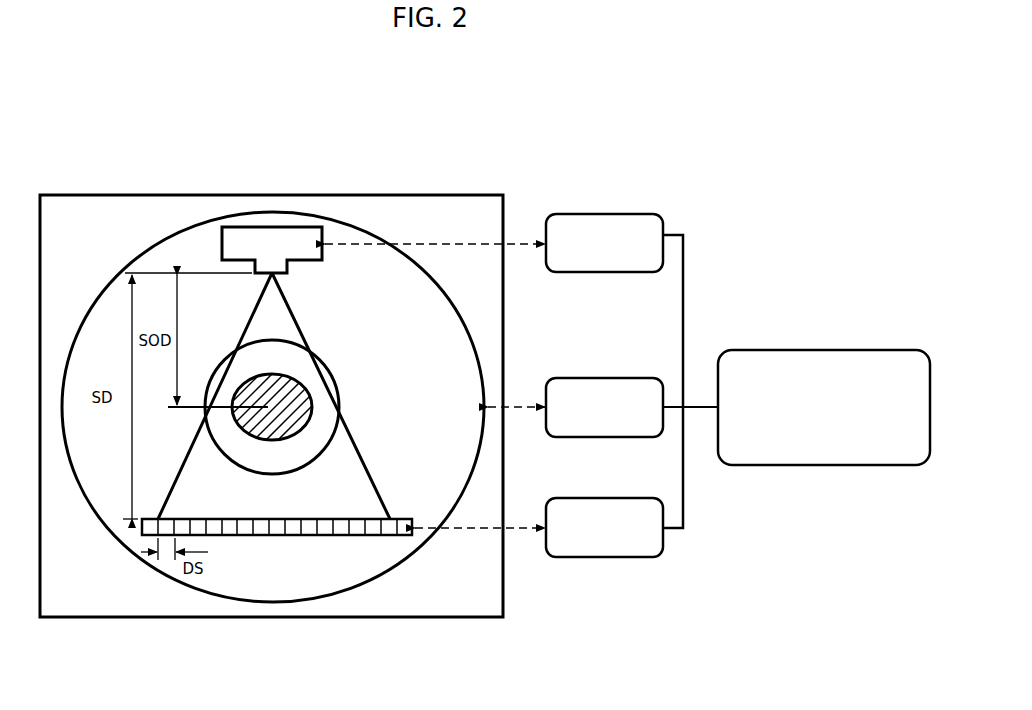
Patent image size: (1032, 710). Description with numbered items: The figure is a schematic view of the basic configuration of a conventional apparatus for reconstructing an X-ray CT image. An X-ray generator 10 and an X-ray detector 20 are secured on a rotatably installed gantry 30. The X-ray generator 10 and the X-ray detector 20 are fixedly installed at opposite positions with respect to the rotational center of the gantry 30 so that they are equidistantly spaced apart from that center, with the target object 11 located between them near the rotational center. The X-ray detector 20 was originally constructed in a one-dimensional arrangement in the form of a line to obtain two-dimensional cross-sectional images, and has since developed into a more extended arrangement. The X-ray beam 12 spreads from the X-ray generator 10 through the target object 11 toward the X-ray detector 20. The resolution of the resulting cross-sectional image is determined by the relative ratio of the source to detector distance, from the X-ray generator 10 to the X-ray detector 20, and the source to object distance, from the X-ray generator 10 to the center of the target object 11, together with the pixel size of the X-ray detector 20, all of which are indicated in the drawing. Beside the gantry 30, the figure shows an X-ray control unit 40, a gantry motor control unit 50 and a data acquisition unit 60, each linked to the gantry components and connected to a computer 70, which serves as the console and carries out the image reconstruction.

The X-ray generator 10 is at (272, 227).
The target object 11 is at (298, 392).
The X-ray beam 12 is at (183, 472).
The X-ray detector 20 is at (278, 535).
The gantry 30 is at (145, 195).
The X-ray control unit 40 is at (603, 214).
The gantry motor control unit 50 is at (603, 378).
The data acquisition unit 60 is at (663, 540).
The computer 70 is at (823, 350).